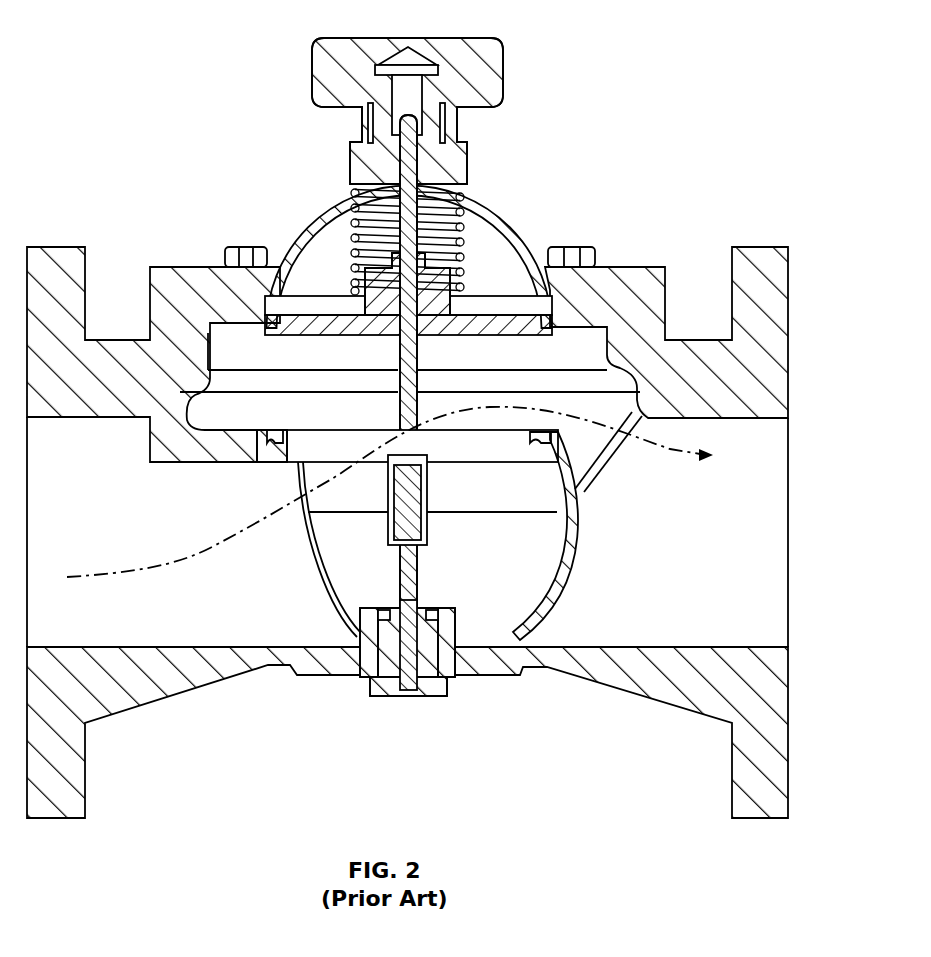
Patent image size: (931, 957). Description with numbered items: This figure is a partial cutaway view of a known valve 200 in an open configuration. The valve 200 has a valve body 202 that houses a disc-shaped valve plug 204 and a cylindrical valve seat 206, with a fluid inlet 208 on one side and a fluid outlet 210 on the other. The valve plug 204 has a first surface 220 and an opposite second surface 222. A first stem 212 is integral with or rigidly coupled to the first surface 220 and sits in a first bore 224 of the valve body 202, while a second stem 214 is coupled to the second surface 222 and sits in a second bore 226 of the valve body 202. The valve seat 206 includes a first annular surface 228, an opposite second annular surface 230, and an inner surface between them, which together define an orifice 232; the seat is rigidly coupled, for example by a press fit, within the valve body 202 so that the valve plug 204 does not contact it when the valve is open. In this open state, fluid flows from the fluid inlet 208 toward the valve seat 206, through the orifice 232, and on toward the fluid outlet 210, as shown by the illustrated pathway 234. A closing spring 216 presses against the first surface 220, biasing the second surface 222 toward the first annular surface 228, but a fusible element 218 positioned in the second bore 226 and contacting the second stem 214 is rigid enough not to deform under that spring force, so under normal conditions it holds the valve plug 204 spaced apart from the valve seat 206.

The valve 200 is at (678, 42).
The valve body 202 is at (760, 278).
The valve plug 204 is at (550, 312).
The valve seat 206 is at (517, 451).
The fluid inlet 208 is at (152, 625).
The fluid outlet 210 is at (700, 615).
The first stem 212 is at (410, 190).
The second stem 214 is at (410, 518).
The closing spring 216 is at (353, 230).
The fusible element 218 is at (407, 628).
The first surface 220 is at (297, 306).
The second surface 222 is at (293, 346).
The first bore 224 is at (415, 160).
The second bore 226 is at (438, 686).
The first annular surface 228 is at (310, 424).
The second annular surface 230 is at (309, 472).
The orifice 232 is at (478, 472).
The pathway 234 is at (130, 572).